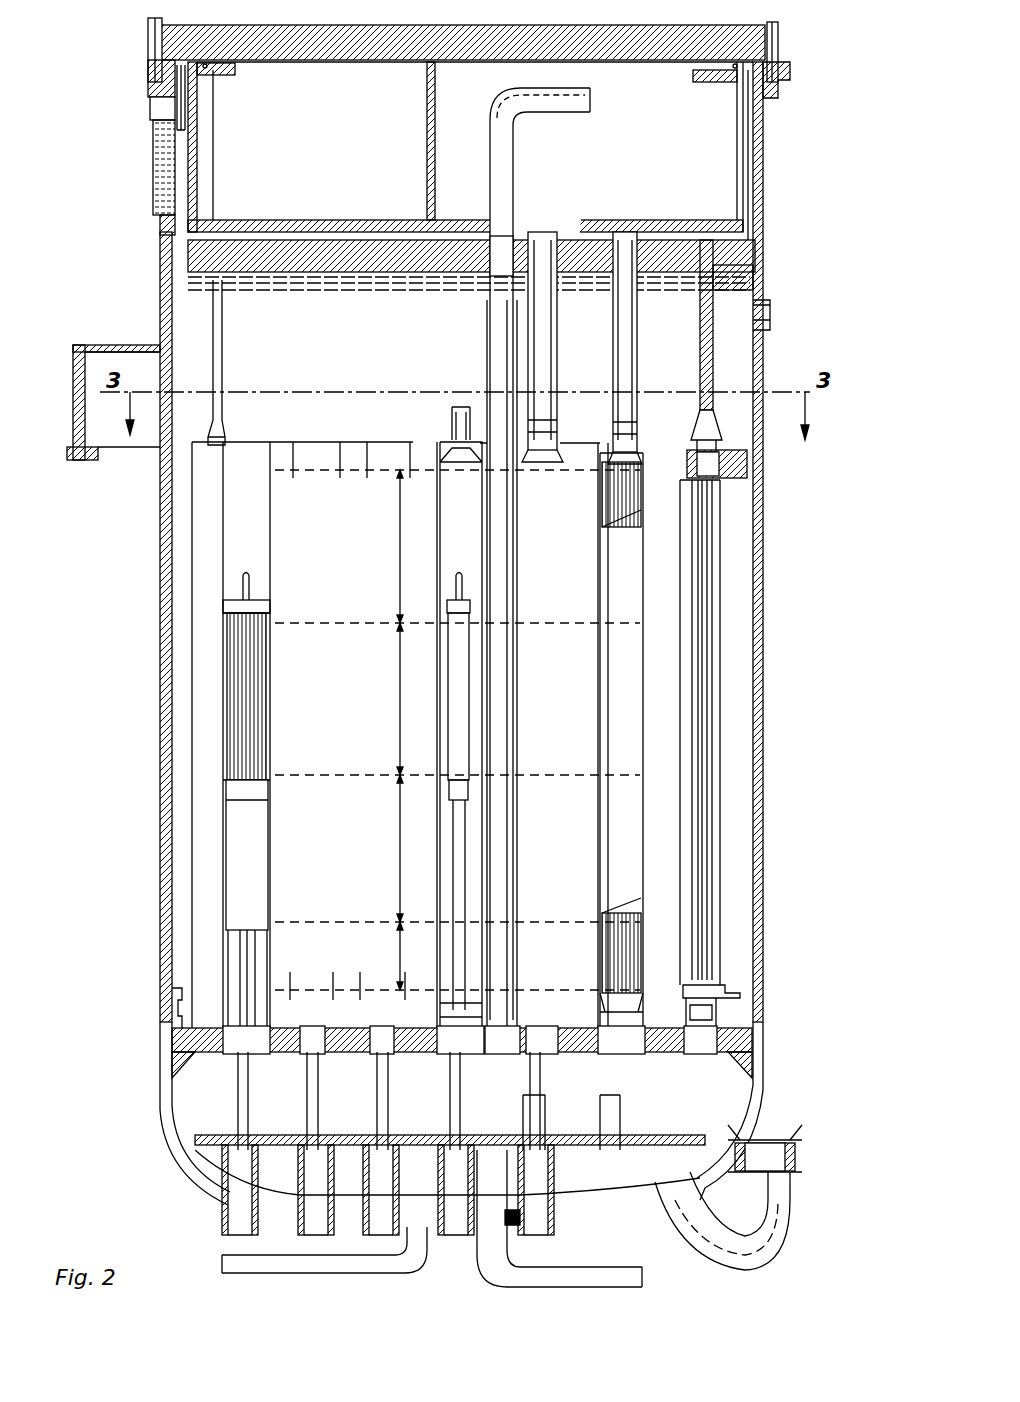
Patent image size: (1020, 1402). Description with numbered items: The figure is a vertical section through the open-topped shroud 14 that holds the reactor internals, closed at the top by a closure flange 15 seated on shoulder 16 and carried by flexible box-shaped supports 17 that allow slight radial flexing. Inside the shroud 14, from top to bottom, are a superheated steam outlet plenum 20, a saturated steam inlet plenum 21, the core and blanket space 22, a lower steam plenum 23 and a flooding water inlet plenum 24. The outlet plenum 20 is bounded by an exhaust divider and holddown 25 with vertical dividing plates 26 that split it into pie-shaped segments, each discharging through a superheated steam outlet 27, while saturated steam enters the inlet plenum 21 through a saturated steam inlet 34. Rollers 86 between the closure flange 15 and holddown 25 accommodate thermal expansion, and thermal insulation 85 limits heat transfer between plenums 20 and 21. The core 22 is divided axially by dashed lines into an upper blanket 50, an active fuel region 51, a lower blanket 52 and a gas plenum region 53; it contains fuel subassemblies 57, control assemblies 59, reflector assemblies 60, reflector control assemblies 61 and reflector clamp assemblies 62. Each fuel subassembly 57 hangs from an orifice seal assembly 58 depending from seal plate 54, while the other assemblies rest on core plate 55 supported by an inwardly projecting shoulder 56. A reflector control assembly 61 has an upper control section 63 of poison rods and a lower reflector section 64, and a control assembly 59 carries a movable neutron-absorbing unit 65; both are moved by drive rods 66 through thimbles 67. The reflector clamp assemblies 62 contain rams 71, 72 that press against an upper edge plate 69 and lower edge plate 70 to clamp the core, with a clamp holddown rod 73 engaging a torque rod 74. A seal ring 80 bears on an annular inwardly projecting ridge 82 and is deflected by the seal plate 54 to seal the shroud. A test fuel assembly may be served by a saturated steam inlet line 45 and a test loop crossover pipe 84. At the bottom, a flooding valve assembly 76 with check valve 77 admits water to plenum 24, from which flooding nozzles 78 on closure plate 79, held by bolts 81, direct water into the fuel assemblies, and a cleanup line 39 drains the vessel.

The shroud 14 is at (765, 585).
The closure flange 15 is at (783, 45).
The shoulder 16 is at (770, 98).
The flexible box-shaped support 17 is at (115, 345).
The superheated steam outlet plenum 20 is at (470, 151).
The saturated steam inlet plenum 21 is at (469, 314).
The core and blanket space 22 is at (175, 665).
The lower steam plenum 23 is at (276, 1089).
The flooding water inlet plenum 24 is at (447, 1172).
The exhaust divider and holddown 25 is at (175, 97).
The vertical dividing plate 26 is at (427, 185).
The superheated steam outlet 27 is at (158, 215).
The saturated steam inlet 34 is at (765, 315).
The cleanup line 39 is at (412, 1265).
The saturated steam inlet line 45 is at (575, 1268).
The upper blanket 50 is at (401, 546).
The active fuel region 51 is at (397, 699).
The lower blanket 52 is at (397, 848).
The gas plenum region 53 is at (397, 956).
The seal plate 54 is at (383, 280).
The core plate 55 is at (630, 1052).
The inwardly projecting shoulder 56 is at (182, 1062).
The fuel subassembly 57 is at (597, 835).
The orifice seal assembly 58 is at (612, 375).
The control assembly 59 is at (455, 605).
The reflector assembly 60 is at (640, 450).
The reflector control assembly 61 is at (265, 600).
The reflector clamp assembly 62 is at (722, 676).
The upper control section 63 is at (262, 740).
The lower reflector section 64 is at (268, 840).
The neutron-absorbing unit 65 is at (485, 672).
The drive rod 66 is at (383, 1108).
The thimble 67 is at (222, 1183).
The upper edge plate 69 is at (750, 465).
The lower edge plate 70 is at (725, 1007).
The upper ram 71 is at (712, 452).
The lower ram 72 is at (720, 985).
The clamp holddown rod 73 is at (718, 352).
The torque rod 74 is at (705, 858).
The flooding valve assembly 76 is at (810, 1205).
The check valve 77 is at (795, 1148).
The flooding nozzle 78 is at (620, 1112).
The closure plate 79 is at (680, 1135).
The seal ring 80 is at (745, 303).
The bolt 81 is at (178, 305).
The annular inwardly projecting ridge 82 is at (515, 1225).
The test loop crossover pipe 84 is at (555, 112).
The thermal insulation 85 is at (240, 235).
The roller 86 is at (220, 72).